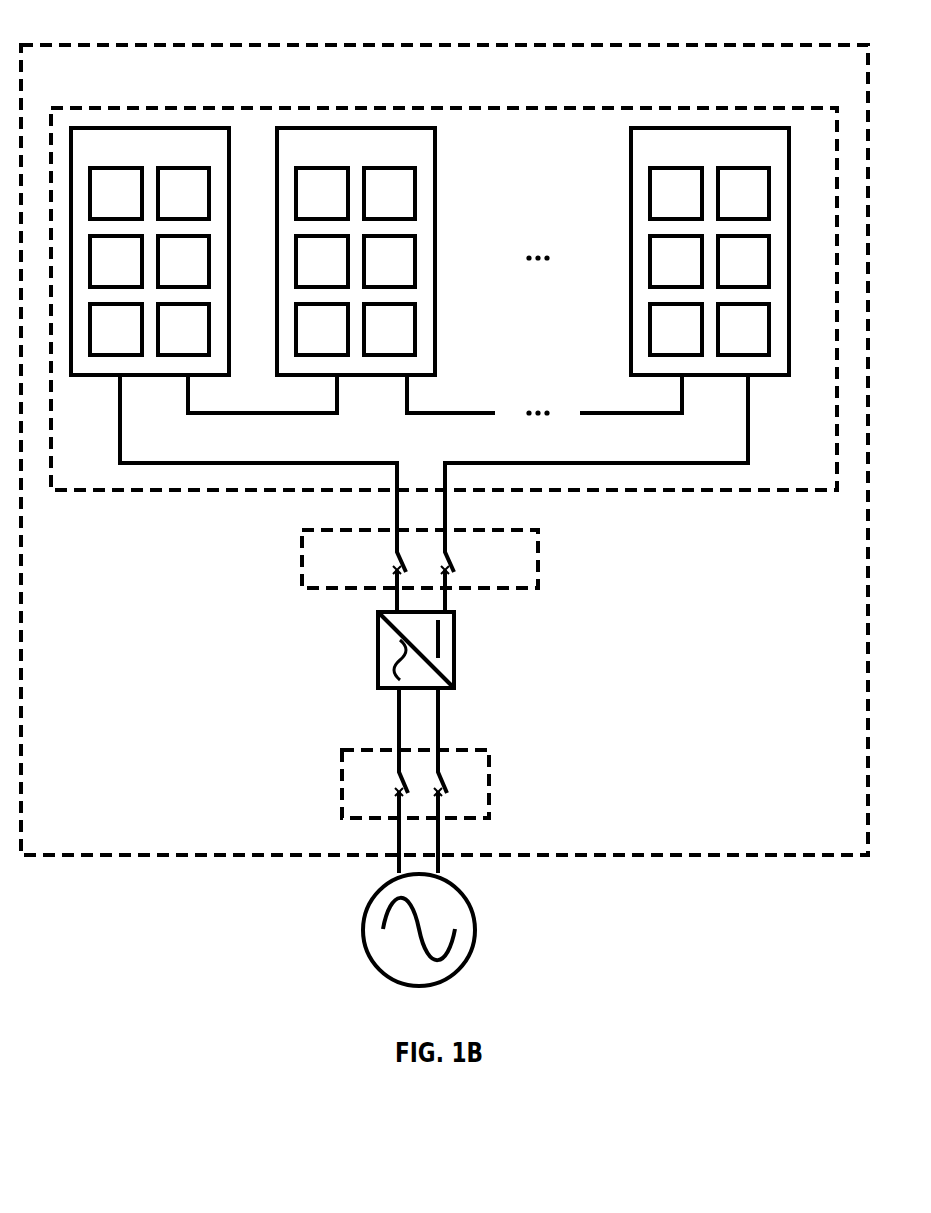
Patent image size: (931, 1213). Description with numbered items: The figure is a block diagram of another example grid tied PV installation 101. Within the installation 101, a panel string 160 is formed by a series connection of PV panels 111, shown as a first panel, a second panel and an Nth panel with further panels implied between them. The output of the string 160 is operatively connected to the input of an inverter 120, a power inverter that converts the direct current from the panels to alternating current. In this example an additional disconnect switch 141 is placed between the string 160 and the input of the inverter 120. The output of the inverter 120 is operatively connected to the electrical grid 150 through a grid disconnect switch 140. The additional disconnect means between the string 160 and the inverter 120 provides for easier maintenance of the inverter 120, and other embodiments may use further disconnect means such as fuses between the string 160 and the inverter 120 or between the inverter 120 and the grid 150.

The grid tied PV installation 101 is at (131, 36).
The panel string 160 is at (575, 102).
The PV panels 111 is at (430, 329).
The disconnect switch 141 is at (538, 570).
The inverter 120 is at (456, 660).
The grid disconnect switch 140 is at (489, 793).
The electrical grid 150 is at (476, 930).